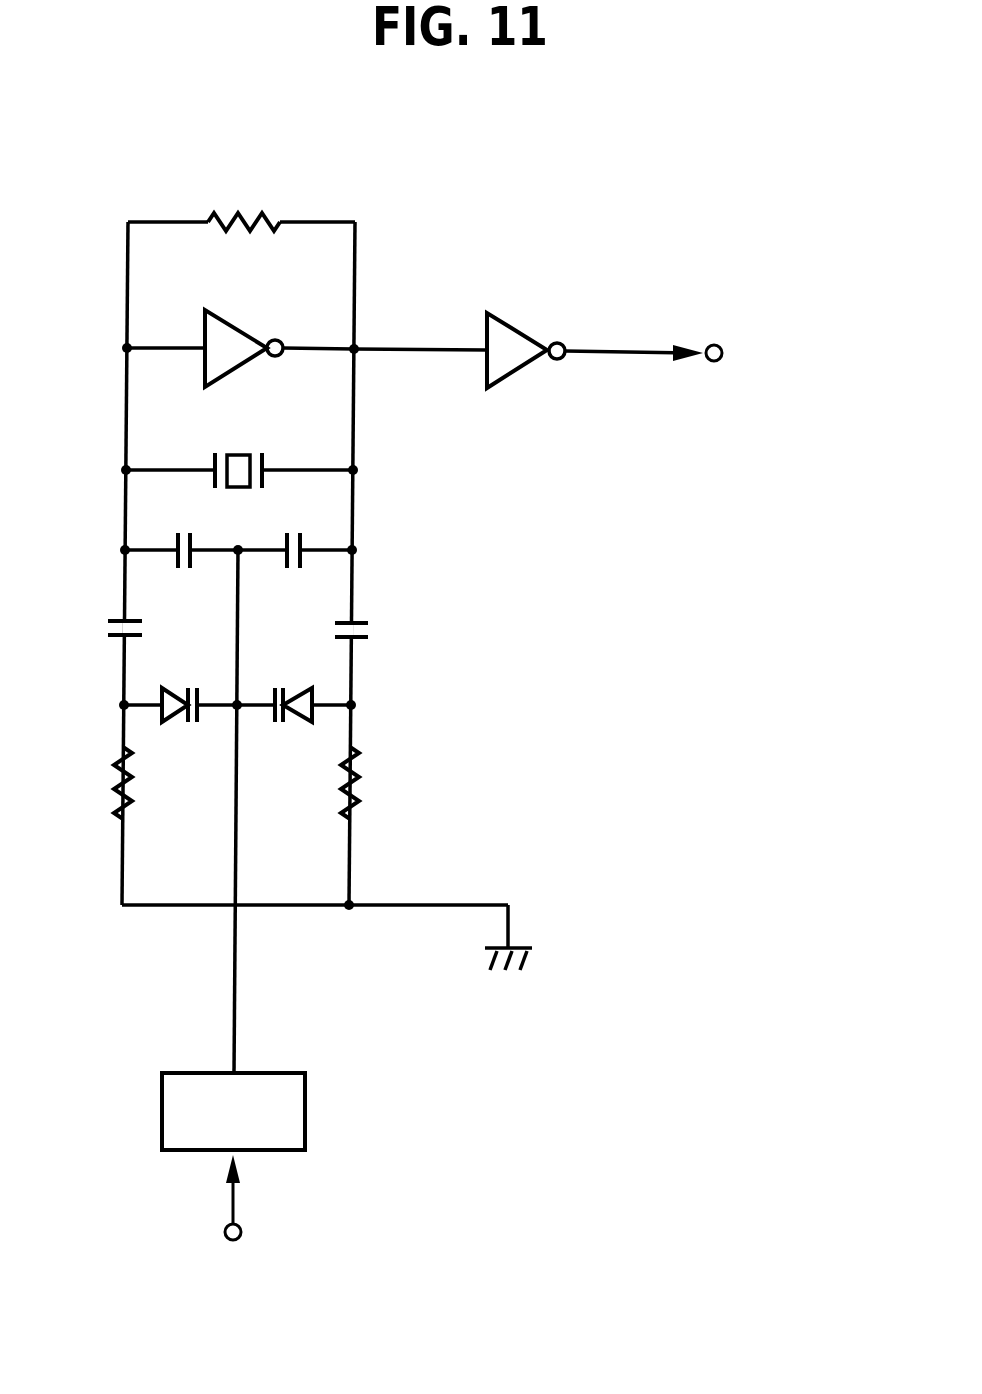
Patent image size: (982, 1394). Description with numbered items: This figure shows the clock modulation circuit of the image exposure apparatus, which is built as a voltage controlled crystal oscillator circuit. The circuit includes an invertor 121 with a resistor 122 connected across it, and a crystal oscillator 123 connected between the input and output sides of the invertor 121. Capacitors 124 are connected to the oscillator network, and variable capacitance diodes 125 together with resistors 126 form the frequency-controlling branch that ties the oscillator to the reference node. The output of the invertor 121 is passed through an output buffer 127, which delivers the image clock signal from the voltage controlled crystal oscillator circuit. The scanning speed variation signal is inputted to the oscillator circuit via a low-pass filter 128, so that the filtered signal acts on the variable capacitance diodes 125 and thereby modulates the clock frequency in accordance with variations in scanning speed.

The invertor 121 is at (246, 331).
The resistor 122 is at (268, 217).
The crystal oscillator 123 is at (266, 456).
The capacitors 124 is at (138, 620).
The variable capacitance diodes 125 is at (200, 688).
The resistors 126 is at (133, 795).
The output buffer 127 is at (516, 328).
The low-pass filter 128 is at (255, 1073).